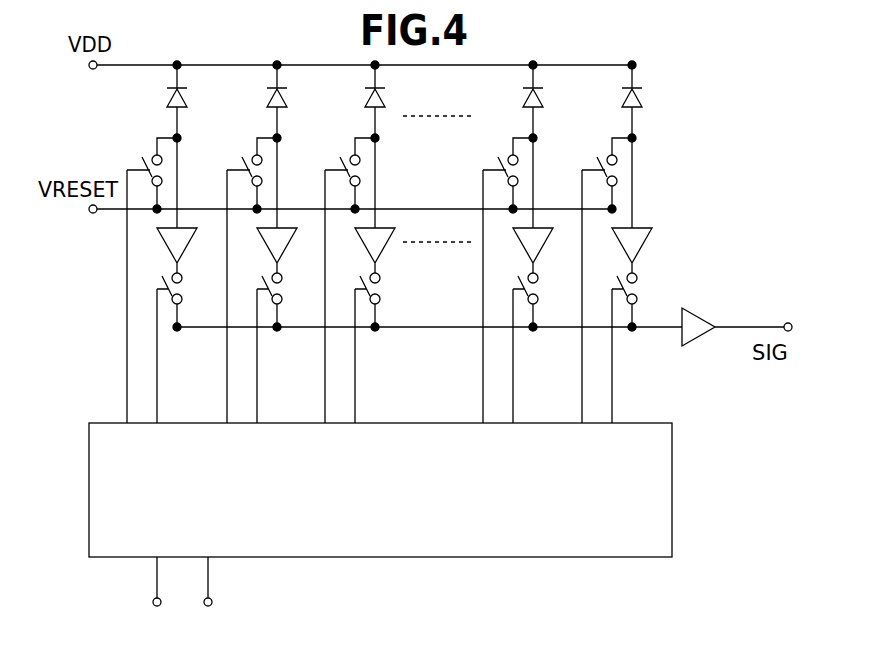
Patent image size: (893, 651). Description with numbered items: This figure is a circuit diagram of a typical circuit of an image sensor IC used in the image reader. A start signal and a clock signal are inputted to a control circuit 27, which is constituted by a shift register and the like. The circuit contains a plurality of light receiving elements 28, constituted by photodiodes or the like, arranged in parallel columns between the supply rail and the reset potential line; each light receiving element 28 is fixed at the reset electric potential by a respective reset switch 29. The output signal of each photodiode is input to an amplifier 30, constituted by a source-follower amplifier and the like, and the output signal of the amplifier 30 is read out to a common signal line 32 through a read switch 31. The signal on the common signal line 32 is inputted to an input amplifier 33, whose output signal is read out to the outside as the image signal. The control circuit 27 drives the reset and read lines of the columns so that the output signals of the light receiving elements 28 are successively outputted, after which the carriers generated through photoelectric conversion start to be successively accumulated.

The control circuit 27 is at (675, 452).
The light receiving elements 28 is at (192, 98).
The reset switches 29 is at (147, 150).
The amplifier 30 is at (163, 243).
The read switch 31 is at (153, 285).
The common signal line 32 is at (662, 325).
The input amplifier 33 is at (708, 315).